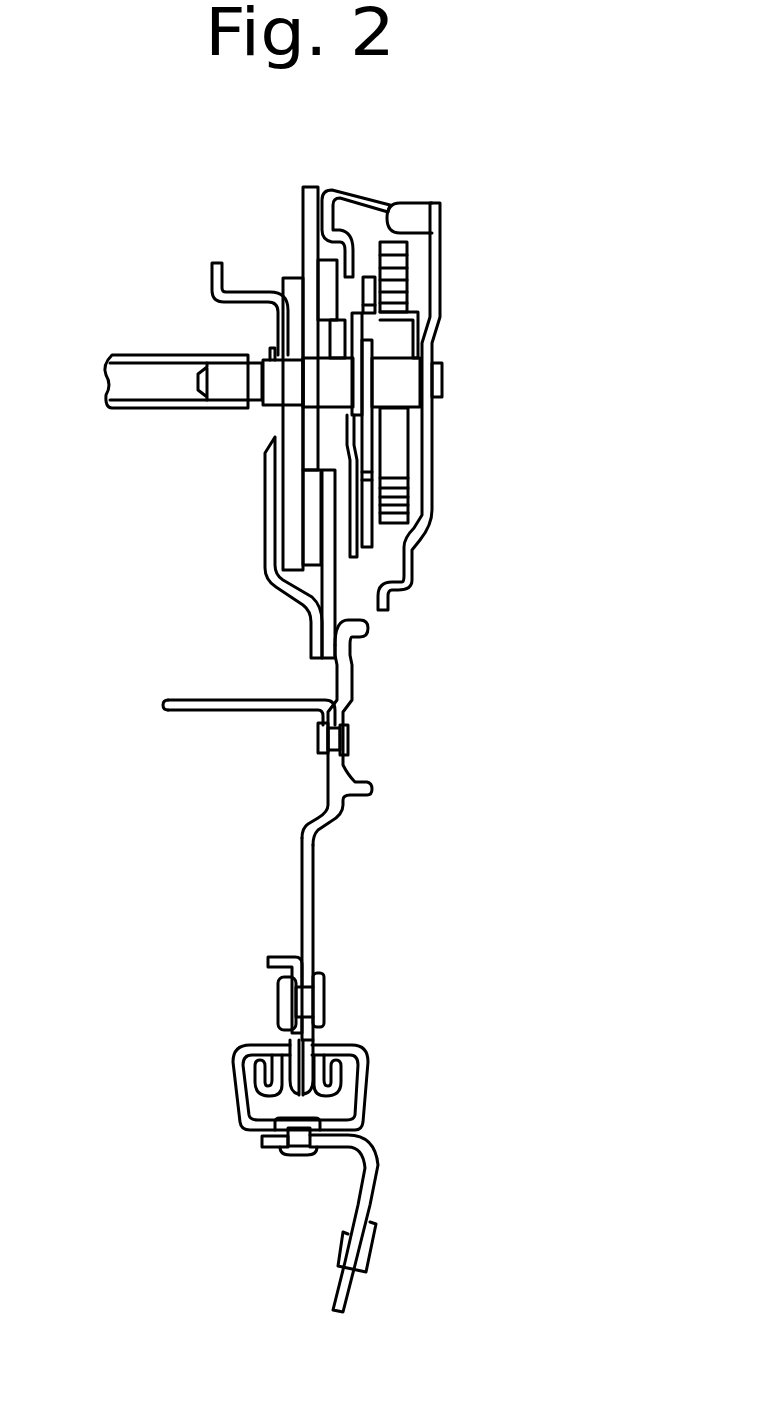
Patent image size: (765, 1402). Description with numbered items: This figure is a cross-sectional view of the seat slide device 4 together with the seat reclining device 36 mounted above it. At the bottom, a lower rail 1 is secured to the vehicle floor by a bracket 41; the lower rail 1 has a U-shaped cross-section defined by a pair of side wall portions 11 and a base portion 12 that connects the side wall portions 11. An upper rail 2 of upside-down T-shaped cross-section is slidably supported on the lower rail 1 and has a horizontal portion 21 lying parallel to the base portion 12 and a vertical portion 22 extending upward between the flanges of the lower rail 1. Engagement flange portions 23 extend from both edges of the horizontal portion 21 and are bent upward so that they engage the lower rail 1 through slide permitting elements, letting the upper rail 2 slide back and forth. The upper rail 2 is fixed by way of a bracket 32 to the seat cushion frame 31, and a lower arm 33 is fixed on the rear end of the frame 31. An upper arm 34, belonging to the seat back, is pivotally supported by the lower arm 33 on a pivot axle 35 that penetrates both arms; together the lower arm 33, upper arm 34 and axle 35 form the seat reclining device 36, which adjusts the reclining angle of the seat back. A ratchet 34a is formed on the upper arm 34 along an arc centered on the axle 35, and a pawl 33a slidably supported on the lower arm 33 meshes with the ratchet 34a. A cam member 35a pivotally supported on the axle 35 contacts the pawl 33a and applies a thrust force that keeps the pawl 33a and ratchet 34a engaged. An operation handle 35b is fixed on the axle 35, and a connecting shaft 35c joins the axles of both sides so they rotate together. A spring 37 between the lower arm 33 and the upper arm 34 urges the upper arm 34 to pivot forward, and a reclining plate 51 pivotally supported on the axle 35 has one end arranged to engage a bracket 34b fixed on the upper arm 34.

The lower rail 1 is at (375, 1082).
The upper rail 2 is at (262, 955).
The seat slide device 4 is at (208, 1107).
The side wall portion 11 is at (232, 1088).
The base portion 12 is at (272, 1133).
The horizontal portion 21 is at (273, 1097).
The vertical portion 22 is at (320, 1035).
The engagement flange portion 23 is at (260, 1072).
The seat cushion frame 31 is at (350, 695).
The bracket 32 is at (308, 868).
The lower arm 33 is at (332, 598).
The pawl 33a is at (305, 502).
The upper arm 34 is at (305, 230).
The ratchet 34a is at (300, 590).
The bracket 34b is at (372, 188).
The pivot axle 35 is at (407, 393).
The cam member 35a is at (308, 433).
The operation handle 35b is at (355, 505).
The connecting shaft 35c is at (135, 353).
The seat reclining device 36 is at (460, 215).
The spring 37 is at (402, 262).
The bracket 41 is at (372, 1202).
The reclining plate 51 is at (422, 318).